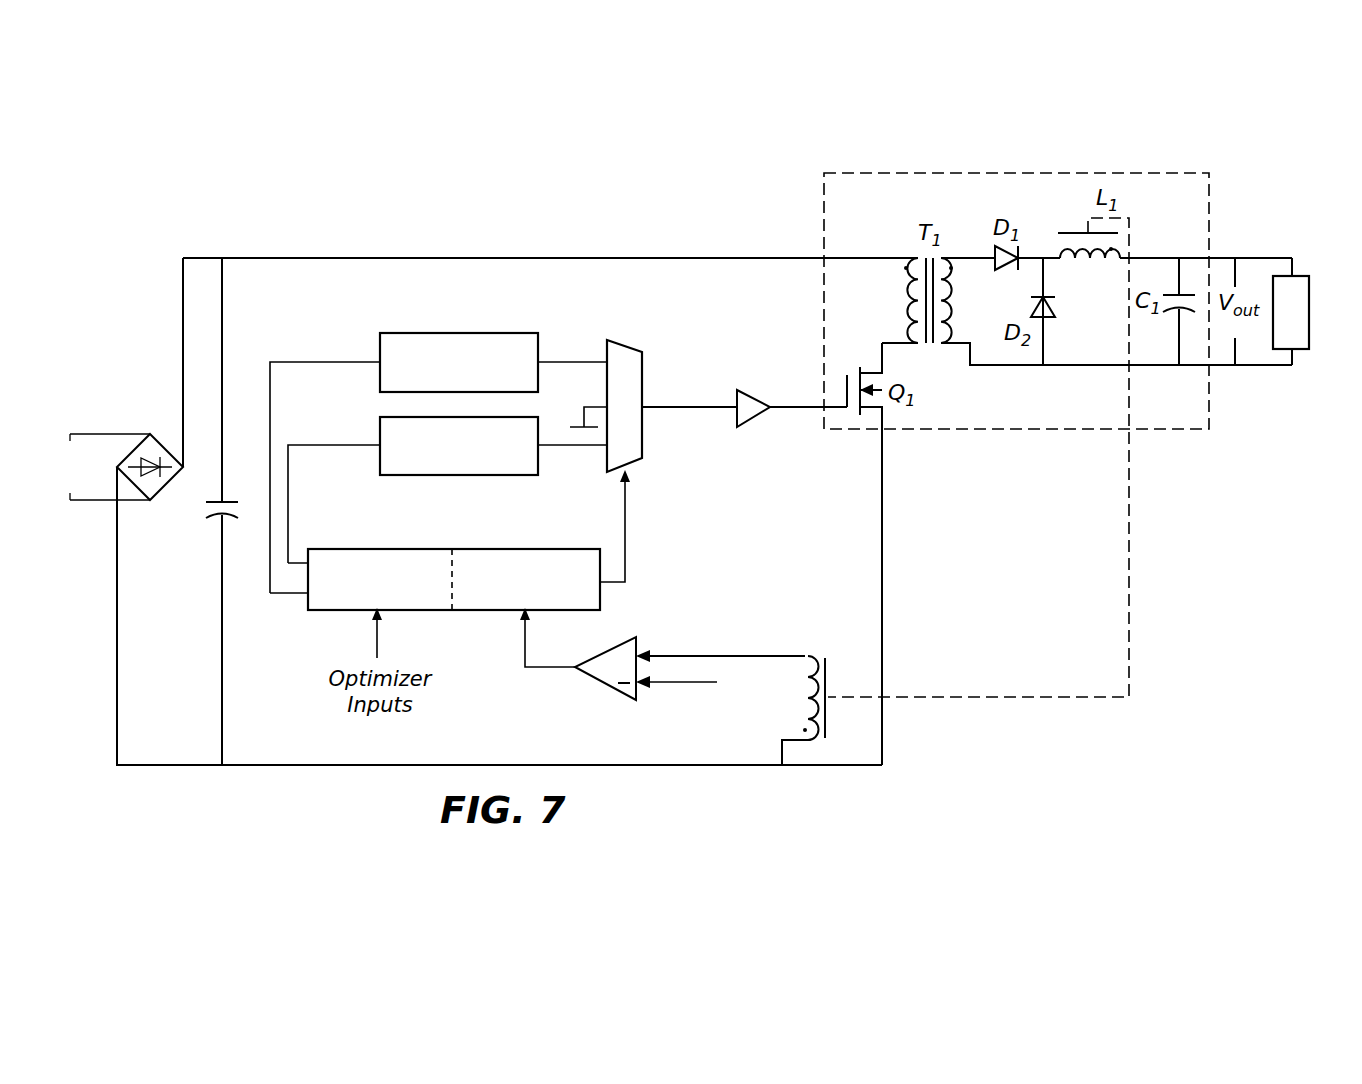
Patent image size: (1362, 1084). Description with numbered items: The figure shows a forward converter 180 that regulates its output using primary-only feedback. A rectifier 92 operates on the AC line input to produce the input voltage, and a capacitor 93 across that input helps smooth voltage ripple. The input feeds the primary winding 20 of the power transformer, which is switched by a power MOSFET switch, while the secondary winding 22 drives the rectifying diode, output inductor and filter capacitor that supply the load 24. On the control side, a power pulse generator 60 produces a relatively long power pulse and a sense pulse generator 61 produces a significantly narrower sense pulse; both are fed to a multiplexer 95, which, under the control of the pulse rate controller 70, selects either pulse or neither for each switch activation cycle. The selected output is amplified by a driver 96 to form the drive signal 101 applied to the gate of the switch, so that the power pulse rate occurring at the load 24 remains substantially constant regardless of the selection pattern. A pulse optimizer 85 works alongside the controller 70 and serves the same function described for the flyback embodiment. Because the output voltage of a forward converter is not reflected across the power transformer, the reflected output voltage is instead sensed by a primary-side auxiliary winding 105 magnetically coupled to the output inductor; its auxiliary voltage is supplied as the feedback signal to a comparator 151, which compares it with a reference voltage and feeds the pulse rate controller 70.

The forward converter 180 is at (458, 182).
The rectifier 92 is at (128, 392).
The capacitor 93 is at (205, 513).
The power pulse generator 60 is at (478, 330).
The sense pulse generator 61 is at (468, 478).
The pulse optimizer 85 is at (365, 548).
The pulse rate controller 70 is at (600, 595).
The multiplexer 95 is at (620, 340).
The drive signal 101 is at (687, 405).
The driver 96 is at (748, 390).
The primary winding 20 is at (914, 256).
The secondary winding 22 is at (944, 256).
The load 24 is at (1310, 315).
The auxiliary winding 105 is at (800, 654).
The comparator 151 is at (593, 685).